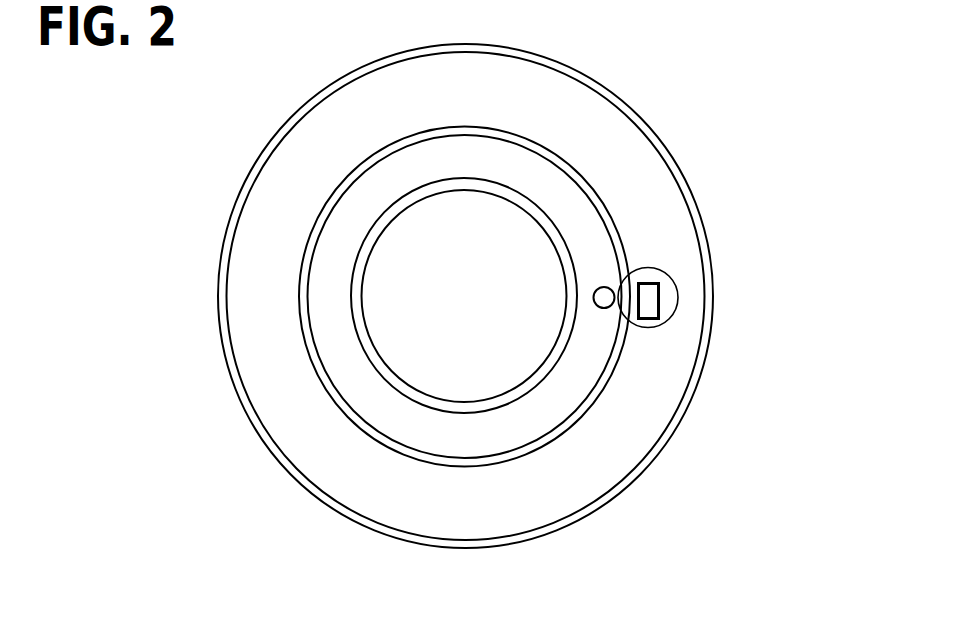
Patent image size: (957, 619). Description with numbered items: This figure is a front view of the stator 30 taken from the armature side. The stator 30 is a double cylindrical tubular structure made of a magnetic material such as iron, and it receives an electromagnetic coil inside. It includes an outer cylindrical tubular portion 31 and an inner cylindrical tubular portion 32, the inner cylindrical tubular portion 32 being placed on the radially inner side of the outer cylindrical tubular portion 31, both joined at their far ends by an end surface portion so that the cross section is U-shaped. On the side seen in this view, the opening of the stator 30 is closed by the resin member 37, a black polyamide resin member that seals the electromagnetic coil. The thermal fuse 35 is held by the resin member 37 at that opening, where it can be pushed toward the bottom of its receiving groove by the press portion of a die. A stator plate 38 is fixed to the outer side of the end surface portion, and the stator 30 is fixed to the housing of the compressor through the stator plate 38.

The stator 30 is at (312, 100).
The outer cylindrical tubular portion 31 is at (707, 348).
The inner cylindrical tubular portion 32 is at (605, 382).
The thermal fuse 35 is at (648, 305).
The resin member 37 is at (667, 373).
The stator plate 38 is at (537, 412).